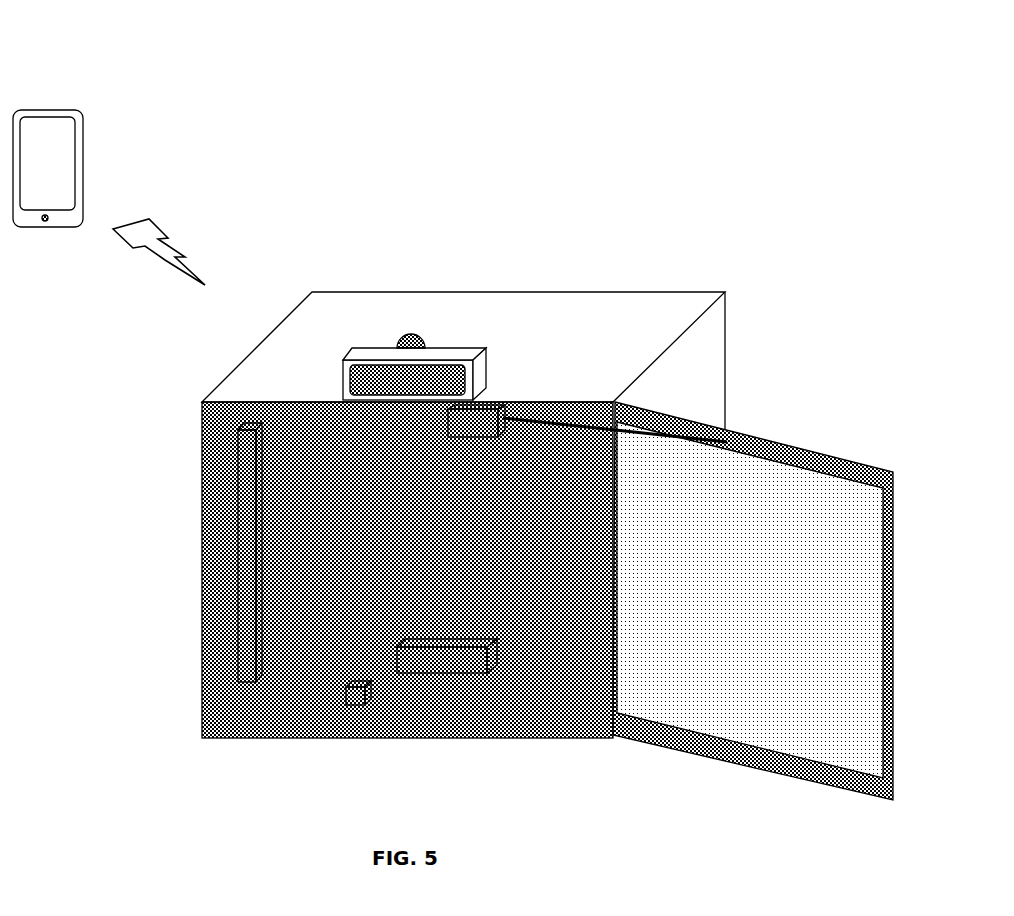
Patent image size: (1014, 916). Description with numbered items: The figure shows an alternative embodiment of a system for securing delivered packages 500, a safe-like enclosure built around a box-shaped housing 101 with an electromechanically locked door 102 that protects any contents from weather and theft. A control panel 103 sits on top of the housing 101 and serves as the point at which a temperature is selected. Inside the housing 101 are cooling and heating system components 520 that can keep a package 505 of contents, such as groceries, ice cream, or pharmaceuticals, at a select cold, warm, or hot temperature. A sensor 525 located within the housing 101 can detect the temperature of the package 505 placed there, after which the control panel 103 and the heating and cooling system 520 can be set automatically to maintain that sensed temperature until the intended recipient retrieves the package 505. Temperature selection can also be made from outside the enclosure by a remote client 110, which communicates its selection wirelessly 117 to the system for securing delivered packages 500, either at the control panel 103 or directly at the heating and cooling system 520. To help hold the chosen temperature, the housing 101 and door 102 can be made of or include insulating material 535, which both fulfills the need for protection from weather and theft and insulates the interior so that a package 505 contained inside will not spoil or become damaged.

The remote client 110 is at (60, 130).
The wireless communication 117 is at (165, 260).
The system for securing delivered packages 500 is at (404, 248).
The housing 101 is at (635, 298).
The door 102 is at (768, 599).
The insulating material 535 is at (798, 540).
The control panel 103 is at (370, 352).
The heating and cooling system 520 is at (252, 523).
The package 505 is at (452, 646).
The sensor 525 is at (355, 703).